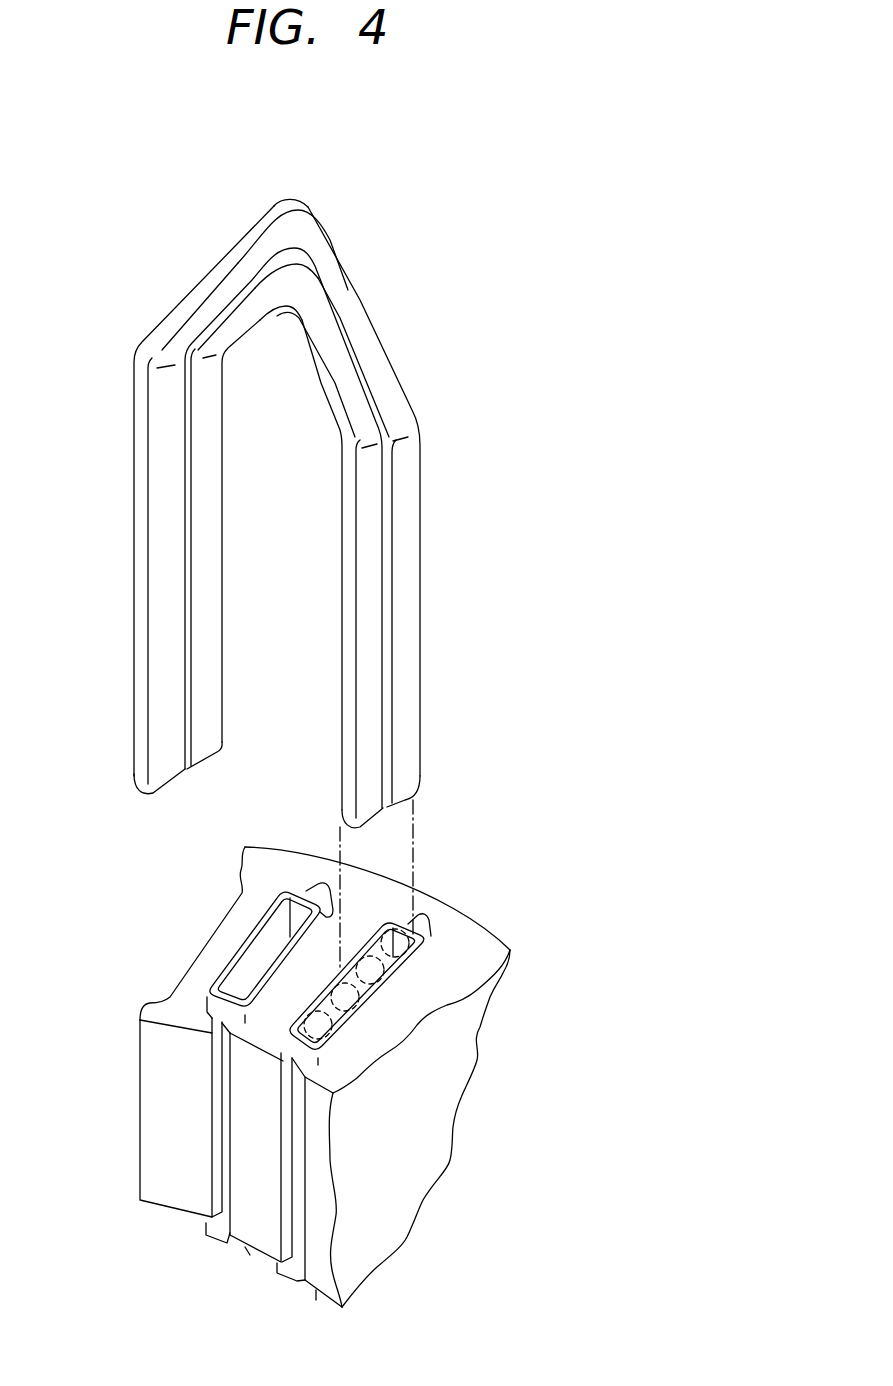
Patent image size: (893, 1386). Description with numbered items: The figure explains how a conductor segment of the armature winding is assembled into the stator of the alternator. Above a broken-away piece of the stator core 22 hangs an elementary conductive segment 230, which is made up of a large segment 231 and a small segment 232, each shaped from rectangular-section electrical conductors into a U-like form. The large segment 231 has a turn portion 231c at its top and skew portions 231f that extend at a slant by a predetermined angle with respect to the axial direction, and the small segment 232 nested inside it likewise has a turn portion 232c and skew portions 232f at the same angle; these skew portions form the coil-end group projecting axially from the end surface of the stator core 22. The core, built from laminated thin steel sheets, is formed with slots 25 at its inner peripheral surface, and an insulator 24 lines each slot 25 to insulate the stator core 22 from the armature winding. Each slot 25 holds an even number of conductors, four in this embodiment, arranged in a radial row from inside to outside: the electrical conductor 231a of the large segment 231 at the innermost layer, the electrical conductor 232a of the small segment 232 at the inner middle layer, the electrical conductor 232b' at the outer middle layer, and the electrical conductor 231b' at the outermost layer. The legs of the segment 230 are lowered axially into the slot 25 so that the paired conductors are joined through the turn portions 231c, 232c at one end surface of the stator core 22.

The stator core 22 is at (474, 944).
The insulator 24 is at (415, 938).
The slot 25 is at (227, 1121).
The elementary conductive segment 230 is at (428, 361).
The large segment 231 is at (358, 321).
The electrical conductor at innermost layer 231a is at (330, 1040).
The electrical conductor at outermost layer 231b' is at (493, 993).
The turn portion 231c is at (299, 214).
The skew portion 231f is at (231, 289).
The small segment 232 is at (367, 419).
The electrical conductor at inner middle layer 232a is at (363, 1013).
The electrical conductor at outer middle layer 232b' is at (473, 1039).
The turn portion 232c is at (292, 278).
The skew portion 232f is at (224, 338).